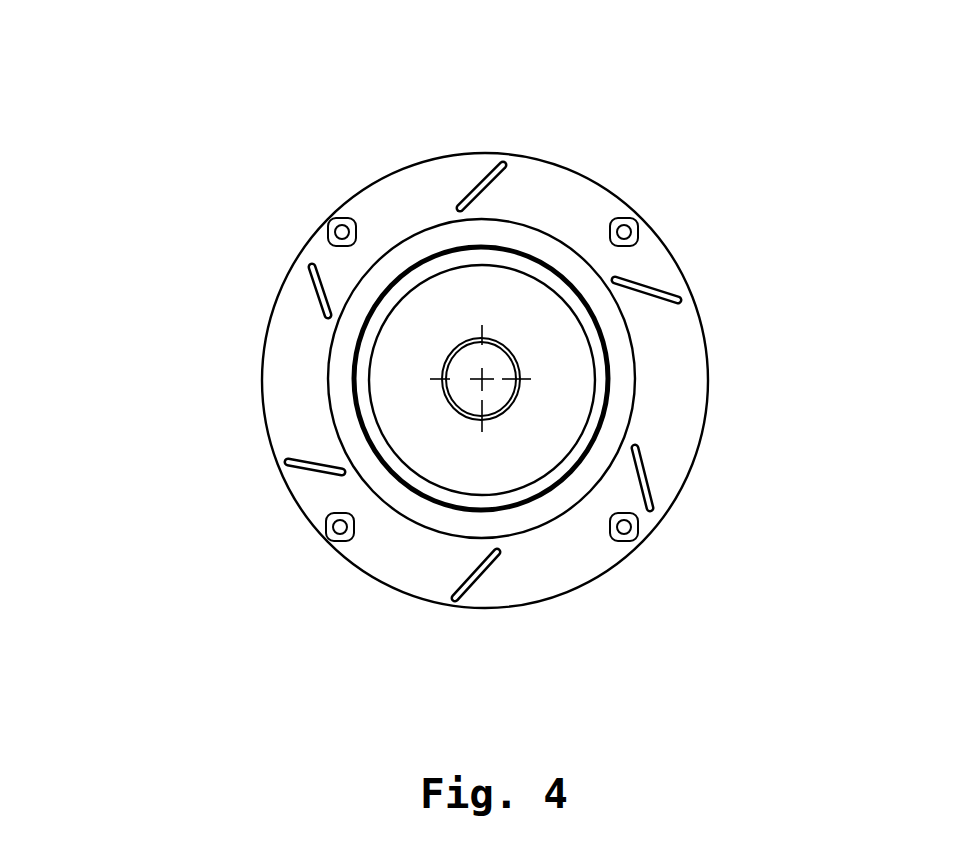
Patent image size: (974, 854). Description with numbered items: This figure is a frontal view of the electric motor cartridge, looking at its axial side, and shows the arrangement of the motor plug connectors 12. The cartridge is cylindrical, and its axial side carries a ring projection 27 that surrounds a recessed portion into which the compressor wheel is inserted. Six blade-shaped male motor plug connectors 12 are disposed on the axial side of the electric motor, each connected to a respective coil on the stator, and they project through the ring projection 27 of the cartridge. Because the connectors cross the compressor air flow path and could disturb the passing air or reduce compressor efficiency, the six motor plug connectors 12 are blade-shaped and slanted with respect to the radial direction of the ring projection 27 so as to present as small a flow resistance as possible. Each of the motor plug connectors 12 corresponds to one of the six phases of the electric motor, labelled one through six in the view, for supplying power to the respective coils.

The motor plug connector 12 is at (476, 185).
The ring projection 27 is at (578, 200).